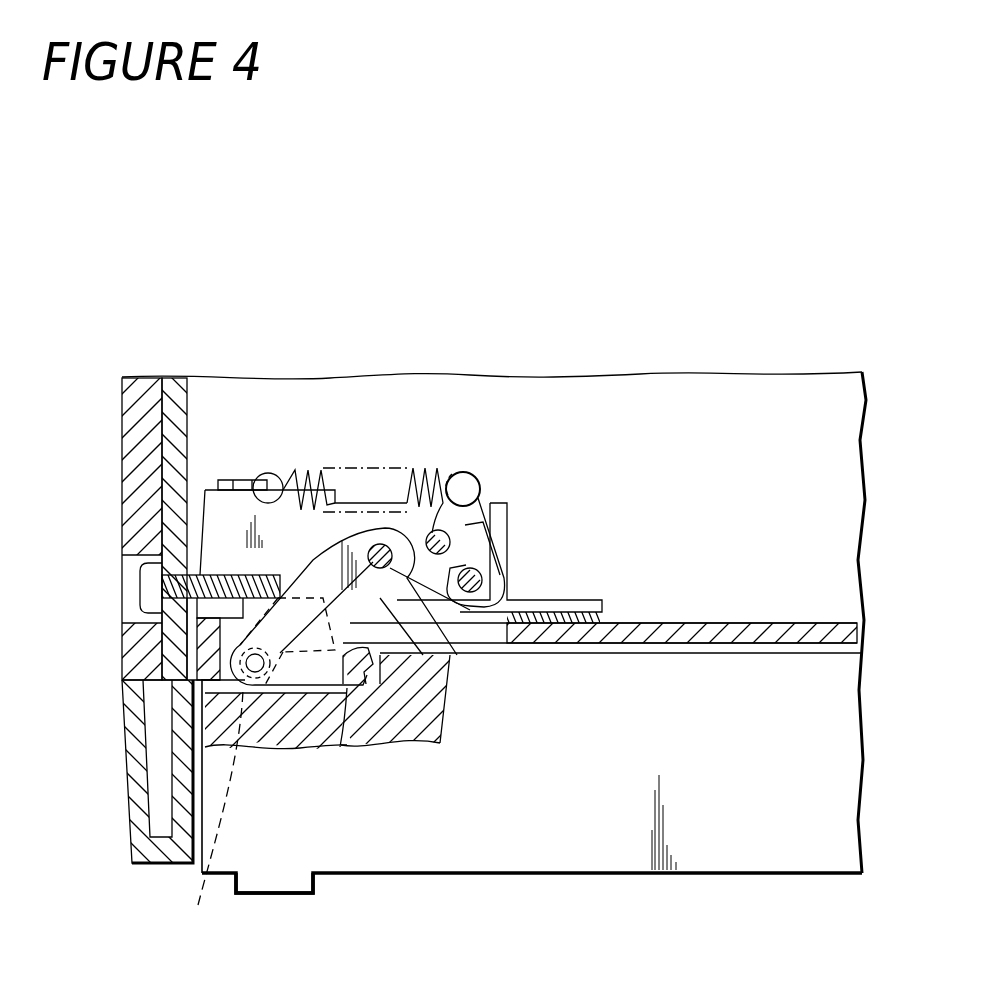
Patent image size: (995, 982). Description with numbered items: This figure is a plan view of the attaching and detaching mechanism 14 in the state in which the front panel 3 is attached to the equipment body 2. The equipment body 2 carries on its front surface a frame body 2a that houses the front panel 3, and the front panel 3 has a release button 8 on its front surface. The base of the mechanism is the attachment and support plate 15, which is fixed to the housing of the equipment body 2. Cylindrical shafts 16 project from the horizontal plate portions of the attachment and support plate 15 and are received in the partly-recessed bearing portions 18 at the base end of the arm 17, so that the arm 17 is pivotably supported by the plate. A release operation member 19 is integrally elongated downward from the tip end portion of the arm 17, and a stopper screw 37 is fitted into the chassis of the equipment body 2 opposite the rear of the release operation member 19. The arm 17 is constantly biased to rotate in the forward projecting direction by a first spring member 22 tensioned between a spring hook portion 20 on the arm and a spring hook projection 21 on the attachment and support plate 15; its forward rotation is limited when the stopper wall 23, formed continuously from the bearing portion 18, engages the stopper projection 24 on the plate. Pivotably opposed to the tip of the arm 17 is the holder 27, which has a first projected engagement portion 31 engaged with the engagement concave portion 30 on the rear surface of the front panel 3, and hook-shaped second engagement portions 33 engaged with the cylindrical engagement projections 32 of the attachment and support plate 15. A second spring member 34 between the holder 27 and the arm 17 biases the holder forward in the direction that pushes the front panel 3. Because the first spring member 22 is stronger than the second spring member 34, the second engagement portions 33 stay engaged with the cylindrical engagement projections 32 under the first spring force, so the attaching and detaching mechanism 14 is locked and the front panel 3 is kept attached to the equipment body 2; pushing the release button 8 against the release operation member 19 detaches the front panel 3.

The equipment body 2 is at (117, 418).
The frame body 2a is at (127, 780).
The front panel 3 is at (556, 875).
The release button 8 is at (286, 885).
The attaching and detaching mechanism 14 is at (513, 468).
The attachment and support plate 15 is at (512, 500).
The cylindrical shaft 16 is at (488, 580).
The arm 17 is at (357, 540).
The bearing portion 18 is at (503, 645).
The release operation member 19 is at (257, 607).
The spring hook portion 20 is at (465, 472).
The spring hook projection 21 is at (246, 480).
The first spring member 22 is at (316, 500).
The stopper wall 23 is at (488, 538).
The stopper projection 24 is at (438, 530).
The holder 27 is at (367, 683).
The engagement concave portion 30 is at (383, 747).
The first projected engagement portion 31 is at (347, 690).
The cylindrical engagement projection 32 is at (383, 640).
The second hook-shaped engagement portion 33 is at (393, 505).
The second spring member 34 is at (202, 816).
The stopper screw 37 is at (142, 577).